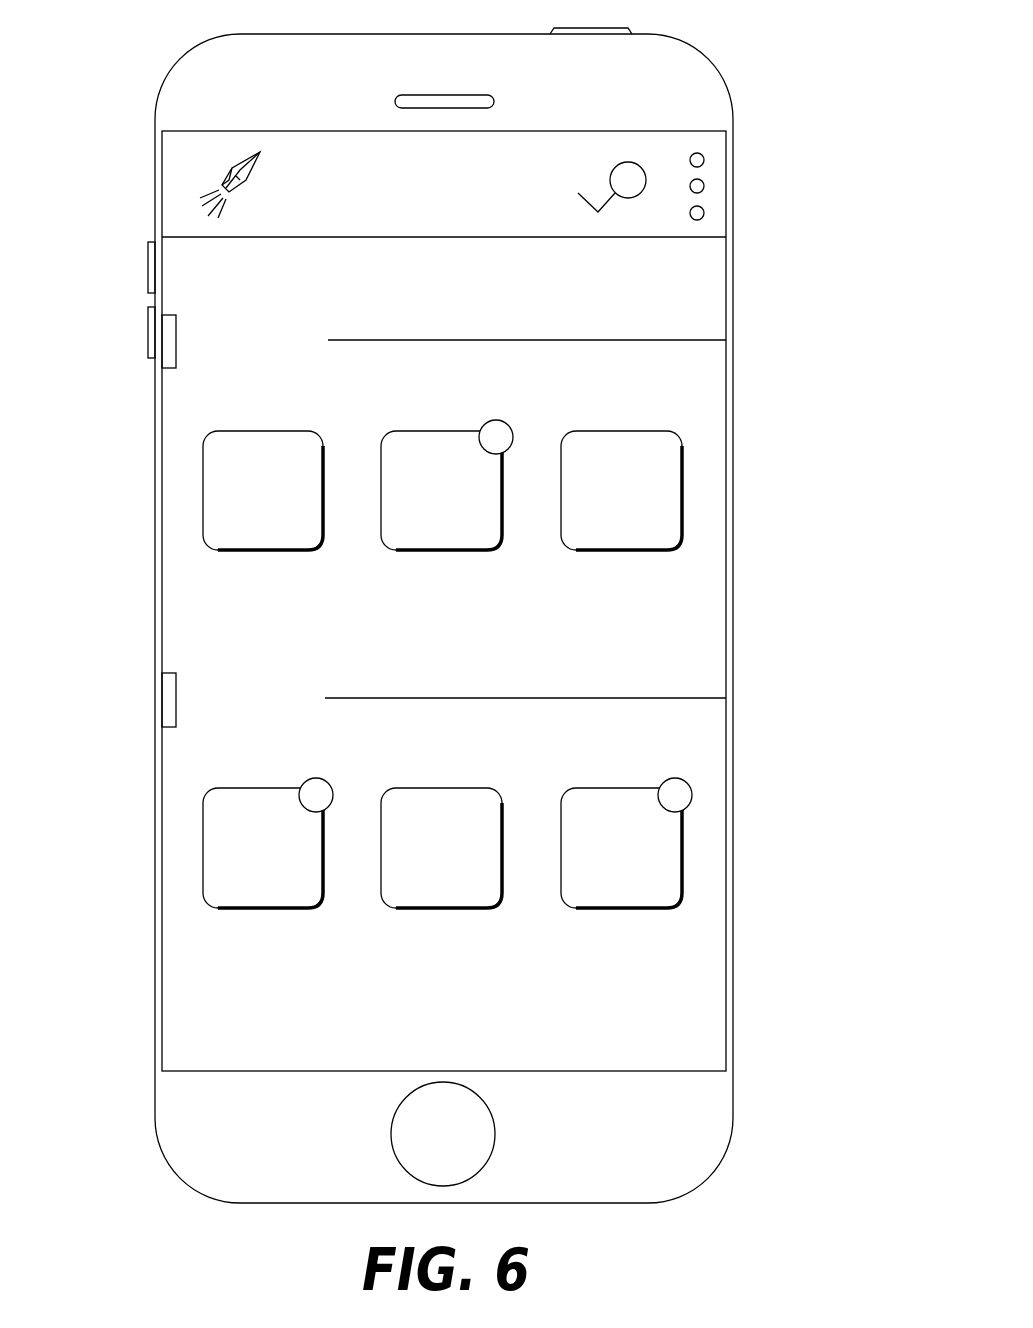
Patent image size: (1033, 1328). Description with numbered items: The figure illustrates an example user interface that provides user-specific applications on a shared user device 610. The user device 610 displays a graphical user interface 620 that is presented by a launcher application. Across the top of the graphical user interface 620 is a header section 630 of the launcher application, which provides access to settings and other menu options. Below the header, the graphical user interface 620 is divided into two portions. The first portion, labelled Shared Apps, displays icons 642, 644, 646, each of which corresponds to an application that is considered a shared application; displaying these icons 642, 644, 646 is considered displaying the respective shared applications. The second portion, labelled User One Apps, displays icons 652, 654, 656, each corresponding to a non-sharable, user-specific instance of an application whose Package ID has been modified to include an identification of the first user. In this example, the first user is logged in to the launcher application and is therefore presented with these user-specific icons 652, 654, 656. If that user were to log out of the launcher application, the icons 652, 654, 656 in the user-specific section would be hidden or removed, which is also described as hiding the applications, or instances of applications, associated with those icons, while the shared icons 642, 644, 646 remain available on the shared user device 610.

The user device 610 is at (698, 53).
The graphical user interface 620 is at (733, 578).
The header section 630 is at (187, 170).
The icon 642 is at (262, 525).
The icon 644 is at (443, 525).
The icon 646 is at (622, 525).
The icon 652 is at (262, 883).
The icon 654 is at (443, 883).
The icon 656 is at (622, 883).